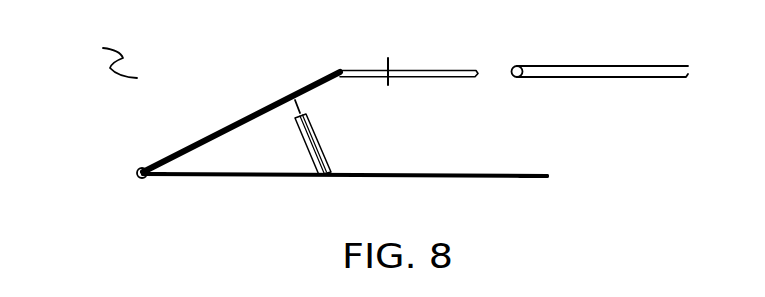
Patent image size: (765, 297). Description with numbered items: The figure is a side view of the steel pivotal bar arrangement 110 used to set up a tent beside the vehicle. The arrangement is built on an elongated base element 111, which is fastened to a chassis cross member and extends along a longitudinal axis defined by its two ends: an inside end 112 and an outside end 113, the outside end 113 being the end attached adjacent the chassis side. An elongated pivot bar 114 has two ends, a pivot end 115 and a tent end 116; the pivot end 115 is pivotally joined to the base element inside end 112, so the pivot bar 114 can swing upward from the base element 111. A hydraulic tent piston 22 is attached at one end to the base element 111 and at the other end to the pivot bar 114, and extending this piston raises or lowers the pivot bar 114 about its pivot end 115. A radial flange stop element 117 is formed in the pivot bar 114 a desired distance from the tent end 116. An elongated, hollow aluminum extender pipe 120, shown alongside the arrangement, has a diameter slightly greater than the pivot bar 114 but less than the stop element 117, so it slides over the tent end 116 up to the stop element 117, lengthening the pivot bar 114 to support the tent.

The pivotal bar arrangement 110 is at (108, 44).
The base element 111 is at (408, 185).
The inside end 112 is at (145, 182).
The outside end 113 is at (550, 177).
The pivot bar 114 is at (205, 136).
The pivot end 115 is at (143, 170).
The tent end 116 is at (478, 68).
The stop element 117 is at (395, 53).
The extender pipe 120 is at (580, 72).
The hydraulic tent piston 22 is at (330, 160).